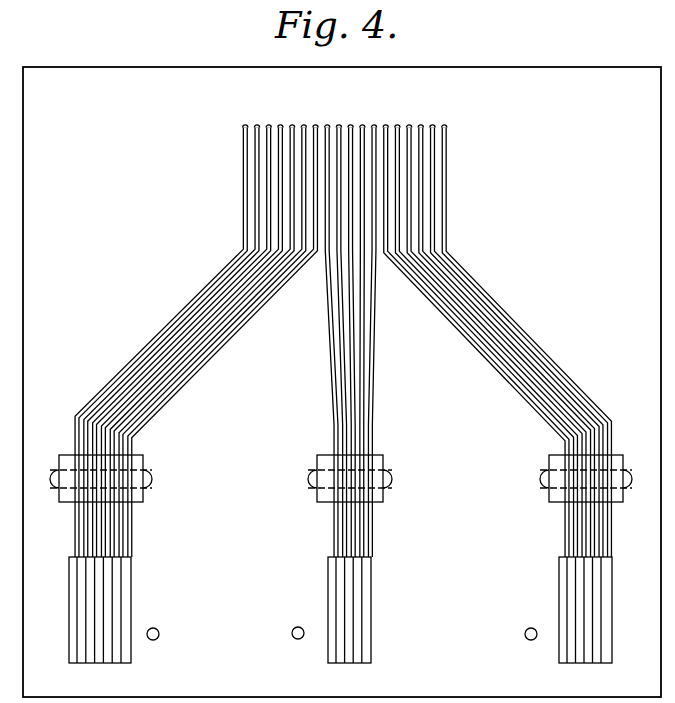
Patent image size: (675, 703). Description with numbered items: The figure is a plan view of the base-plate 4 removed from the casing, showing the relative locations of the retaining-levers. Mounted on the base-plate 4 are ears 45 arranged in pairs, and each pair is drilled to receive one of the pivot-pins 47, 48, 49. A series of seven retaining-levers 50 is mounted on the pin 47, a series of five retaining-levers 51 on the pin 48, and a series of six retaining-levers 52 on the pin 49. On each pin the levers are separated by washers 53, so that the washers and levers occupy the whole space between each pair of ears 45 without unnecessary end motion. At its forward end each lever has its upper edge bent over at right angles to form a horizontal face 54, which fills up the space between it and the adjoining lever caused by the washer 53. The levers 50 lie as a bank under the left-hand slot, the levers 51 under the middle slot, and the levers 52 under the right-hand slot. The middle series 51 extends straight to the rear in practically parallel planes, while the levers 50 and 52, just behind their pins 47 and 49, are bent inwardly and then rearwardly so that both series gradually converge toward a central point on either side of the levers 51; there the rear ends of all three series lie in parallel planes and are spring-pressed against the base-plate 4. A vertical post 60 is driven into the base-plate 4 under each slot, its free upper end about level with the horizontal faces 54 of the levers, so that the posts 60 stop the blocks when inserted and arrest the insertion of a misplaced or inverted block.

The base-plate 4 is at (342, 382).
The ears 45 is at (62, 455).
The pivot-pin 47 is at (152, 478).
The pivot-pin 48 is at (393, 478).
The pivot-pin 49 is at (631, 474).
The retaining-levers 50 is at (197, 341).
The retaining-levers 51 is at (362, 341).
The retaining-levers 52 is at (511, 367).
The washers 53 is at (76, 502).
The horizontal face 54 is at (70, 583).
The post 60 is at (296, 639).